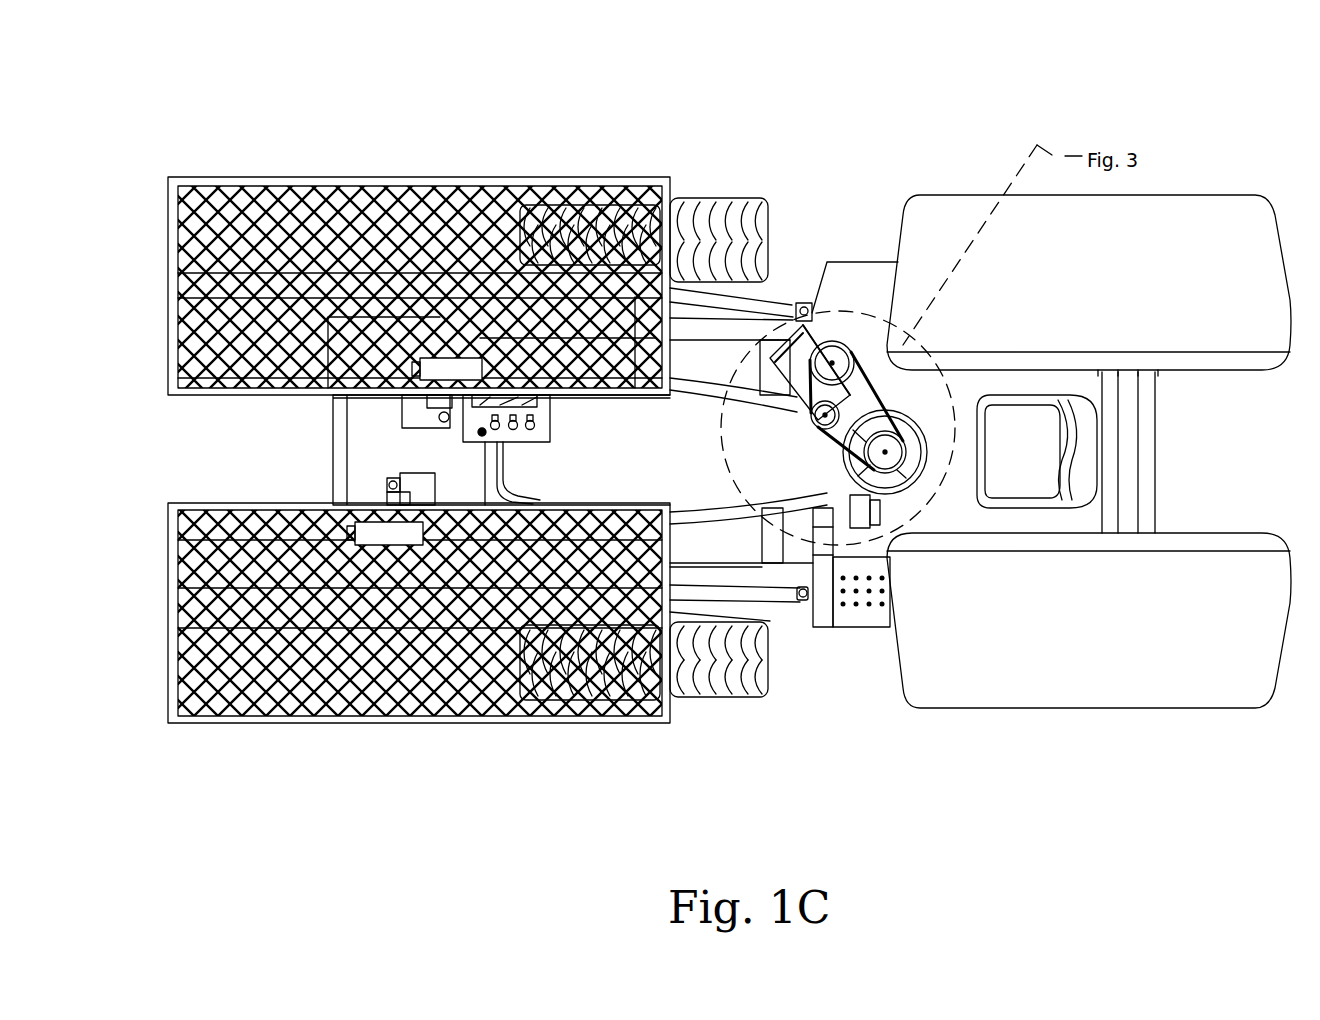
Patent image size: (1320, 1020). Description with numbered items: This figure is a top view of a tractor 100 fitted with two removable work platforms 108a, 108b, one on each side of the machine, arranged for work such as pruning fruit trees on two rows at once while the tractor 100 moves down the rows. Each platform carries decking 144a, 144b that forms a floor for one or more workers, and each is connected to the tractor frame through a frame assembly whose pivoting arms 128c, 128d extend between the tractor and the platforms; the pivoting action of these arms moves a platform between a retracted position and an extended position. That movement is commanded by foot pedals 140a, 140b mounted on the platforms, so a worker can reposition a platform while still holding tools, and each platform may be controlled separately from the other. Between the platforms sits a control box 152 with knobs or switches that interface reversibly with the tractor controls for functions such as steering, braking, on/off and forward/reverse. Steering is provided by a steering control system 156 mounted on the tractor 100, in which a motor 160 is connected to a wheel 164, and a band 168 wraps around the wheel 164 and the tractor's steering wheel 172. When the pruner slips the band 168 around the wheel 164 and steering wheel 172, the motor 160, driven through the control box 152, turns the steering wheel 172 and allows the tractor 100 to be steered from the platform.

The tractor 100 is at (992, 55).
The platform 108a is at (233, 736).
The platform 108b is at (233, 158).
The foot pedal 140a is at (385, 548).
The foot pedal 140b is at (440, 365).
The decking 144a is at (482, 640).
The decking 144b is at (500, 206).
The arm 128c is at (768, 605).
The arm 128d is at (737, 210).
The control box 152 is at (460, 430).
The steering control system 156 is at (855, 288).
The motor 160 is at (797, 306).
The wheel 164 is at (850, 345).
The band 168 is at (877, 388).
The steering wheel 172 is at (883, 494).